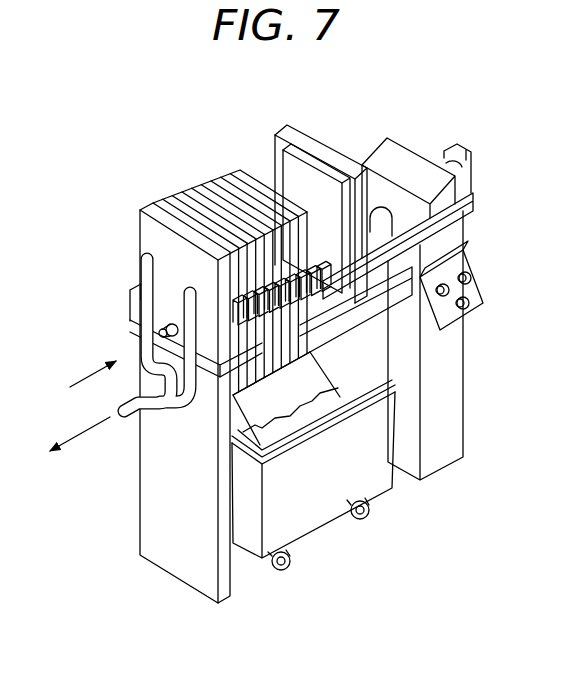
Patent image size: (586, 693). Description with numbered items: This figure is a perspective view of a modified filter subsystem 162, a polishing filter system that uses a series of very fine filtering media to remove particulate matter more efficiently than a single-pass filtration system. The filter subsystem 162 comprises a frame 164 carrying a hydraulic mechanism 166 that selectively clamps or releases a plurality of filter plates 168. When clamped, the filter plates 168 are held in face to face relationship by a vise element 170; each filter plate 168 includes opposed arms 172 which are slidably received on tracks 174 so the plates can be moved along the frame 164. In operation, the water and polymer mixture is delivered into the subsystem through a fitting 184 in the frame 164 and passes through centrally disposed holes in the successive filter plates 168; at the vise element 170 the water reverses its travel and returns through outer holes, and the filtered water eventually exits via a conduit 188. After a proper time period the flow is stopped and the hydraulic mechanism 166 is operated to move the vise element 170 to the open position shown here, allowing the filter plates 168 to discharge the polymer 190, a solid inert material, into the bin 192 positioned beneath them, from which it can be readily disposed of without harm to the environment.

The filter subsystem 162 is at (211, 124).
The frame 164 is at (148, 507).
The hydraulic mechanism 166 is at (466, 154).
The filter plates 168 is at (227, 190).
The vise element 170 is at (310, 134).
The arms 172 is at (348, 338).
The tracks 174 is at (398, 241).
The fitting 184 is at (160, 330).
The conduit 188 is at (120, 414).
The polymer 190 is at (297, 412).
The bin 192 is at (303, 517).